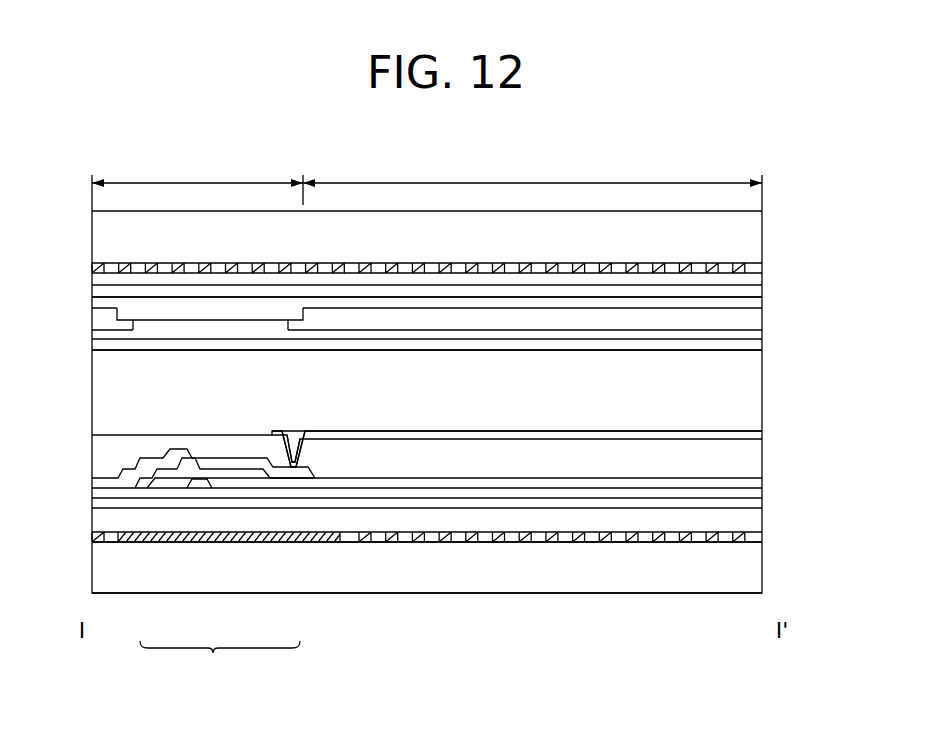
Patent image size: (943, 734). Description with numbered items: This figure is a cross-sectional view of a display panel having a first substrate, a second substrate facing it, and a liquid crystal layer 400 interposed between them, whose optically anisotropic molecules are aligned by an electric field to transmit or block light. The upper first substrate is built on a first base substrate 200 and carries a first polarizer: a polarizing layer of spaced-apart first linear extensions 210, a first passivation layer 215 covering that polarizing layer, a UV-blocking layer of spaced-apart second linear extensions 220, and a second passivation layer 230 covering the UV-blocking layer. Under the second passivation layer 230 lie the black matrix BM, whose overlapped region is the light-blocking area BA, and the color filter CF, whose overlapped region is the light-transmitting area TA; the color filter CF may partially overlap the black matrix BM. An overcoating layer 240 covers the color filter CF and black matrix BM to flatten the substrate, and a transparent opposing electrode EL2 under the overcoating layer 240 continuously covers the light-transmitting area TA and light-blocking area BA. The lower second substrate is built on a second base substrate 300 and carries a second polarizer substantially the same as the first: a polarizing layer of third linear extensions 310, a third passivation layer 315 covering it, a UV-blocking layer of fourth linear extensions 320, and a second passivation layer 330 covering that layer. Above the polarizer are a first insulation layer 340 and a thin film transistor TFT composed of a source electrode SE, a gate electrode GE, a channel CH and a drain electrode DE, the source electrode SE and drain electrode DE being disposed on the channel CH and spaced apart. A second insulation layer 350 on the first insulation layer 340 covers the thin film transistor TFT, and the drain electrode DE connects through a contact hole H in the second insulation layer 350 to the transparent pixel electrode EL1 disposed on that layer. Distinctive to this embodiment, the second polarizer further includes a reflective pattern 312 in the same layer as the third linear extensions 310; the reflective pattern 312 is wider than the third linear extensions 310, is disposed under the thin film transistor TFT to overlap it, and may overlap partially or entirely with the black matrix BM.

The first base substrate 200 is at (92, 226).
The first linear extensions 210 is at (762, 268).
The first passivation layer 215 is at (762, 284).
The second linear extensions 220 is at (762, 293).
The color filter CF is at (762, 312).
The black matrix BM is at (189, 321).
The second passivation layer 230 is at (92, 307).
The overcoating layer 240 is at (762, 333).
The opposing electrode EL2 is at (762, 349).
The liquid crystal layer 400 is at (762, 393).
The pixel electrode EL1 is at (762, 433).
The contact hole H is at (292, 428).
The second insulation layer 350 is at (94, 458).
The first insulation layer 340 is at (94, 482).
The second passivation layer 330 is at (762, 488).
The fourth linear extensions 320 is at (762, 506).
The third passivation layer 315 is at (762, 525).
The third linear extensions 310 is at (762, 535).
The reflective pattern 312 is at (322, 544).
The second base substrate 300 is at (762, 577).
The source electrode SE is at (160, 463).
The gate electrode GE is at (200, 485).
The channel CH is at (236, 471).
The drain electrode DE is at (284, 471).
The thin film transistor TFT is at (220, 662).
The light-blocking area BA is at (197, 180).
The light-transmitting area TA is at (532, 171).